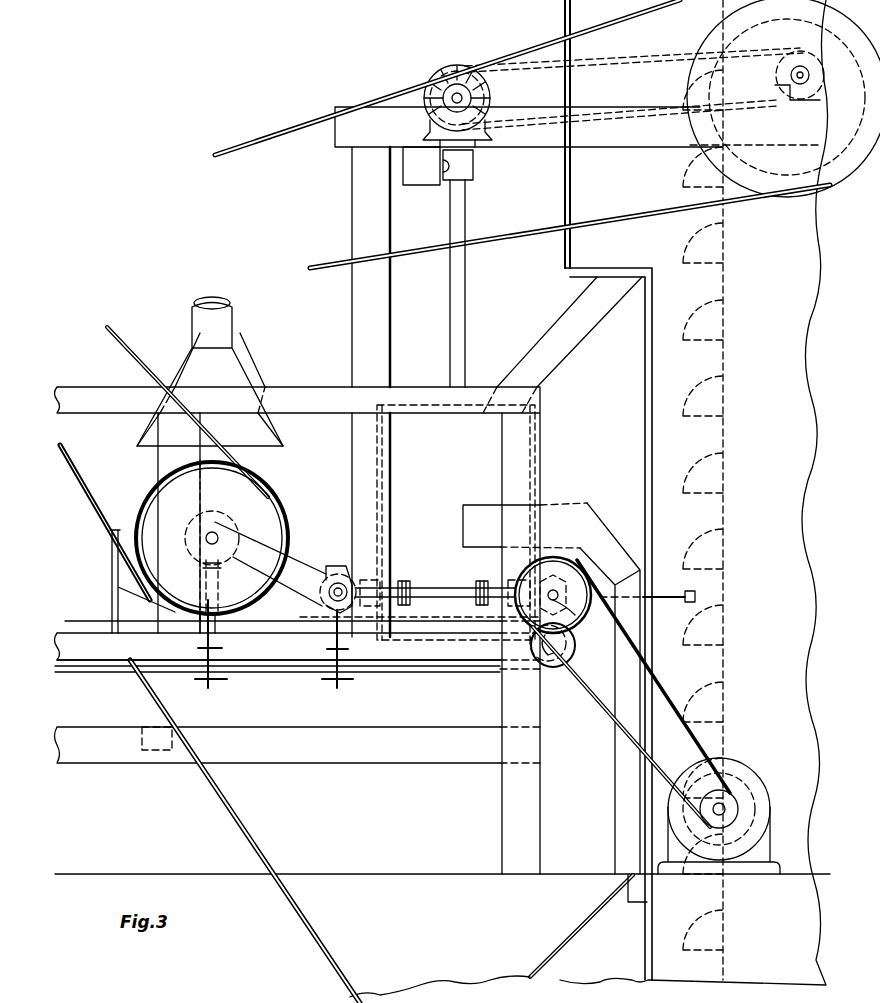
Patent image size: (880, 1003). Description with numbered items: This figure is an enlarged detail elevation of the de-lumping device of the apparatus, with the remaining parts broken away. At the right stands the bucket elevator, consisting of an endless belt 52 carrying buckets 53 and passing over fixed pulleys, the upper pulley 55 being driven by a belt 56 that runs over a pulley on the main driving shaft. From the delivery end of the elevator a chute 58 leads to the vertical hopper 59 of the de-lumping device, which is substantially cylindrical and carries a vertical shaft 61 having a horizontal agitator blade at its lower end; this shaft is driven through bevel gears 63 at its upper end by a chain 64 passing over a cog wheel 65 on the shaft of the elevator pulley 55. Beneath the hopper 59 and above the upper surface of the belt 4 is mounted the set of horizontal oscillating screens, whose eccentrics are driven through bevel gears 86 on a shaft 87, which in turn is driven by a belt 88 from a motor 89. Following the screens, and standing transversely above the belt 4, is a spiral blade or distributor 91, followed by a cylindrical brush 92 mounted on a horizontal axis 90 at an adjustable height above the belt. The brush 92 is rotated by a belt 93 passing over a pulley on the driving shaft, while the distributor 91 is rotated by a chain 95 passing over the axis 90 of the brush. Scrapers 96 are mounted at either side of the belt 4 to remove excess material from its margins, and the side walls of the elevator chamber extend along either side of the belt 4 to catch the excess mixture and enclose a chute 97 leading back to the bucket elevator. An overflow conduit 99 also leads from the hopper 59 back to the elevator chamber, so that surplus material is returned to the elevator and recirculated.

The belt 4 is at (303, 620).
The endless belt 52 is at (722, 368).
The buckets 53 is at (722, 266).
The upper pulley 55 is at (756, 143).
The belt 56 is at (522, 49).
The chute 58 is at (568, 353).
The vertical hopper 59 is at (403, 427).
The vertical shaft 61 is at (463, 289).
The bevel gears 63 is at (490, 90).
The chain 64 is at (633, 60).
The cog wheel 65 is at (800, 50).
The bevel gears 86 is at (598, 535).
The shaft 87 is at (560, 604).
The belt 88 is at (600, 705).
The motor 89 is at (758, 804).
The horizontal axis 90 is at (213, 536).
The spiral blade or distributor 91 is at (320, 563).
The cylindrical brush 92 is at (273, 494).
The belt 93 is at (93, 489).
The chain 95 is at (270, 568).
The scrapers 96 is at (133, 607).
The chute 97 is at (238, 824).
The overflow conduit 99 is at (568, 510).